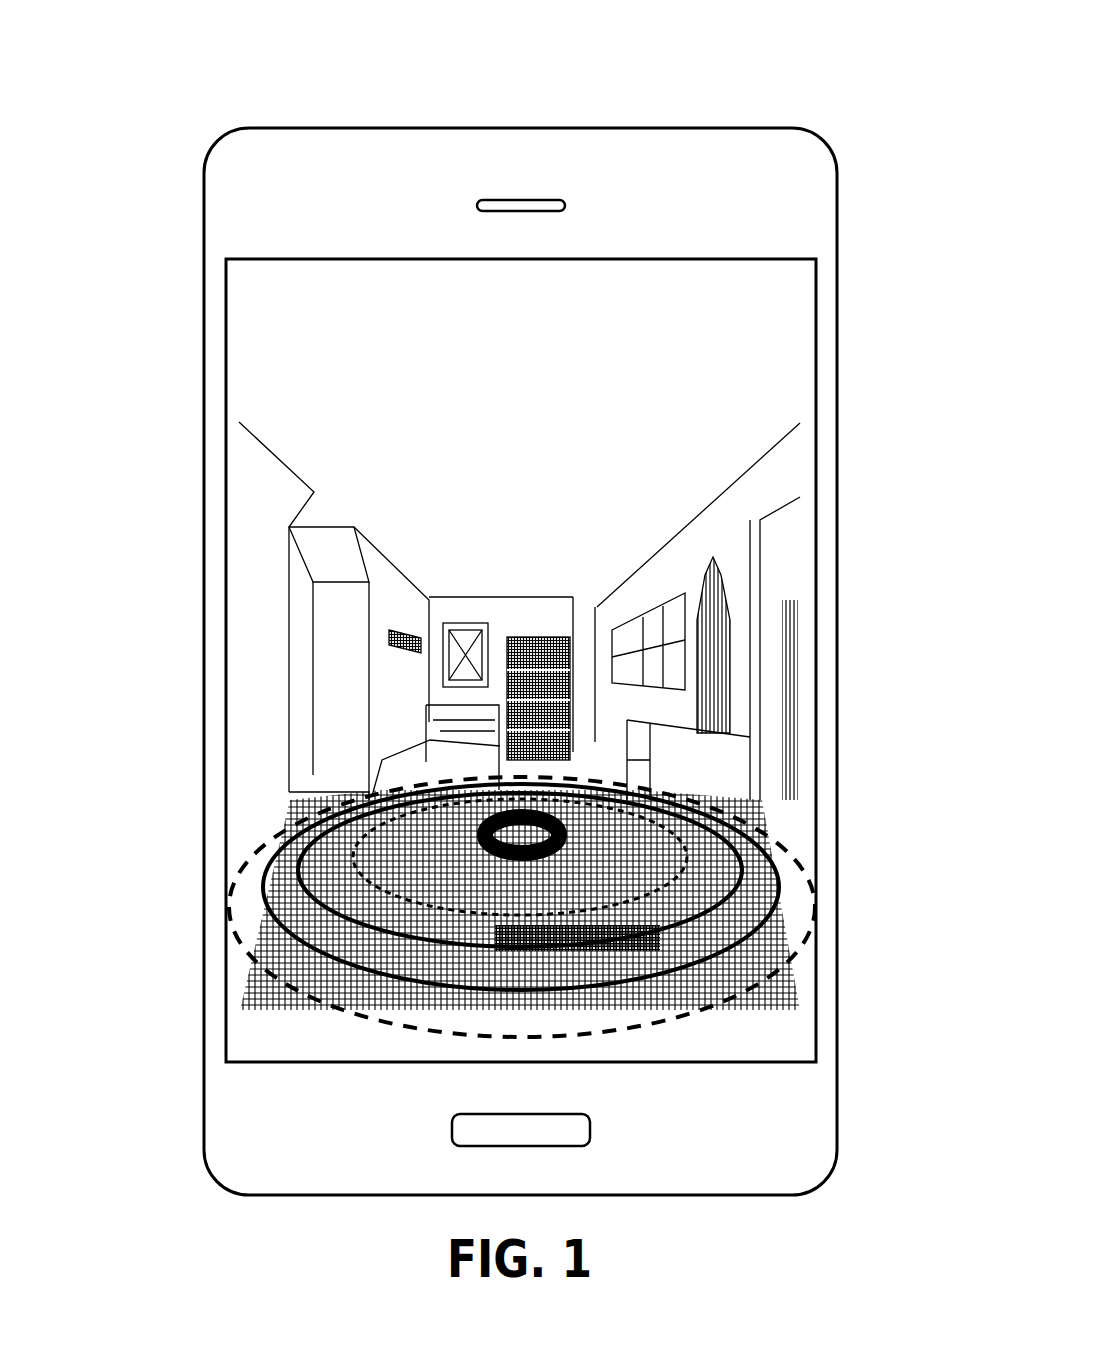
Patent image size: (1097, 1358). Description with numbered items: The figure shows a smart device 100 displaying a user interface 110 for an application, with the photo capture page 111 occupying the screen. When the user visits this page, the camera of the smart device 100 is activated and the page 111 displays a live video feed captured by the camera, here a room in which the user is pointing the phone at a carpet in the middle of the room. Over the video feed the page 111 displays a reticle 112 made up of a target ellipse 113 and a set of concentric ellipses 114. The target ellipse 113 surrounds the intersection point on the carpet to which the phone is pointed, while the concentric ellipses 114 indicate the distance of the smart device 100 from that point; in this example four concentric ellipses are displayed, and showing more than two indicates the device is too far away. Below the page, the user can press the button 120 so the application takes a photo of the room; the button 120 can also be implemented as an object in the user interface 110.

The smart device 100 is at (782, 163).
The user interface 110 is at (312, 232).
The photo capture page 111 is at (519, 657).
The reticle 112 is at (316, 977).
The target ellipse 113 is at (448, 825).
The concentric ellipses 114 is at (246, 880).
The button 120 is at (430, 1159).